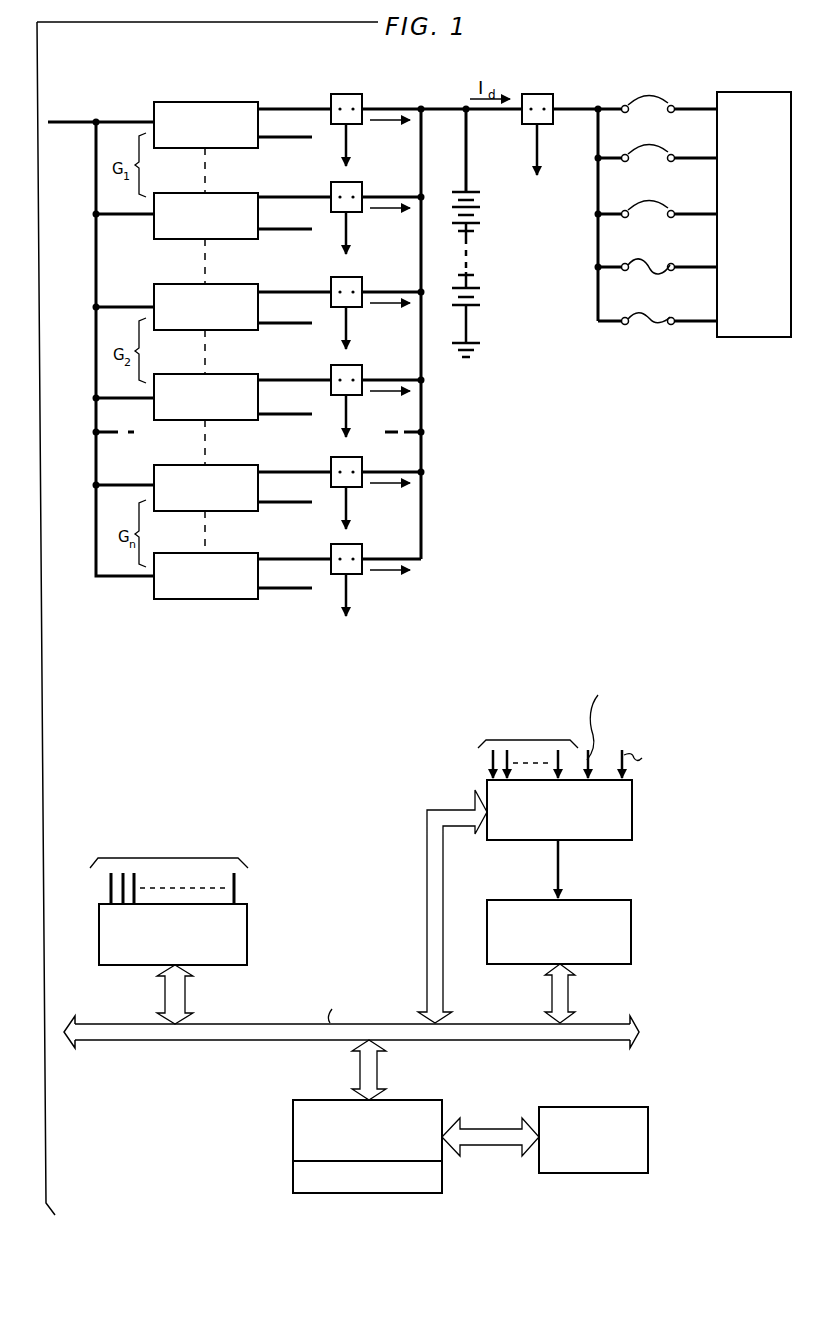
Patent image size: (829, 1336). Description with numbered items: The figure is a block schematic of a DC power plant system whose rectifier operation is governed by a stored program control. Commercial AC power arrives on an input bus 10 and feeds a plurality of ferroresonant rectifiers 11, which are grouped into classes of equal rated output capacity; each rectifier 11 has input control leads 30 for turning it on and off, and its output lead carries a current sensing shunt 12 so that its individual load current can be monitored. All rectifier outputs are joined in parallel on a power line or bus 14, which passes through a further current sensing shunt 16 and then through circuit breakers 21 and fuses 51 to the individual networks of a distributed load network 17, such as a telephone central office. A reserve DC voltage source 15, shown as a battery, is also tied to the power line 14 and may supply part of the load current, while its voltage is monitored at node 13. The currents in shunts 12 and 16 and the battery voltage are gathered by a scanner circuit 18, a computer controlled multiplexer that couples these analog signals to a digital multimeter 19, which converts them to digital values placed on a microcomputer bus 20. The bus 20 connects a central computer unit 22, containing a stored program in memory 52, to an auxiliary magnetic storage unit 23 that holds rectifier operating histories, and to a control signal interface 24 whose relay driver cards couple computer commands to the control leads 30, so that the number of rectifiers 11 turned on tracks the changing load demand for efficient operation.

The input bus 10 is at (84, 122).
The ferroresonant rectifiers 11 is at (222, 102).
The current sensing shunt 12 is at (345, 94).
The node 13 is at (457, 91).
The power line or bus 14 is at (442, 112).
The reserve DC voltage source 15 is at (480, 222).
The current sensing shunt 16 is at (534, 94).
The distributed load network 17 is at (750, 92).
The scanner circuit 18 is at (632, 820).
The digital multimeter 19 is at (631, 933).
The microcomputer bus 20 is at (273, 1024).
The circuit breakers 21 is at (648, 97).
The central computer unit 22 is at (443, 1115).
The auxiliary magnetic storage unit 23 is at (590, 1107).
The control signal interface 24 is at (247, 927).
The input control leads 30 is at (300, 139).
The fuses 51 is at (652, 262).
The memory 52 is at (442, 1180).